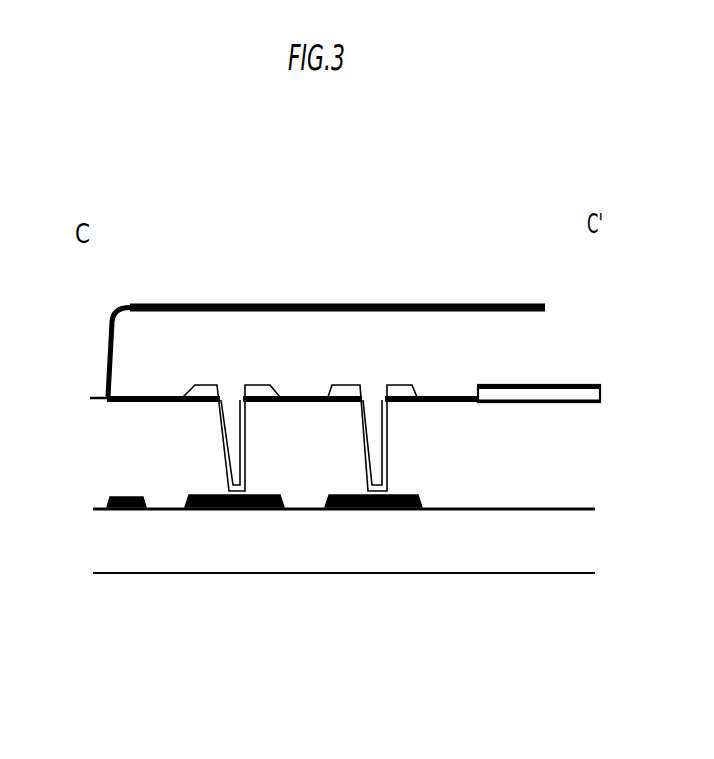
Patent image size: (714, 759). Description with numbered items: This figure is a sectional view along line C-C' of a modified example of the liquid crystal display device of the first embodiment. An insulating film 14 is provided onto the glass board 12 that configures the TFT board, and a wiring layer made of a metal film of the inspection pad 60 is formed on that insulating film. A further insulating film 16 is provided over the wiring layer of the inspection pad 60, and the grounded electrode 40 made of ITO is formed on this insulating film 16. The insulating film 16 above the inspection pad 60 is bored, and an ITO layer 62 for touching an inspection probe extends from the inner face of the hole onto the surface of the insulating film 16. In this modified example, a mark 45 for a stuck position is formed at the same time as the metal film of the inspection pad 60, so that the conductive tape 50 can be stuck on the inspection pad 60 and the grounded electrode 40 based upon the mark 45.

The glass board 12 is at (108, 610).
The insulating film 14 is at (107, 552).
The insulating film 16 is at (97, 448).
The grounded electrode 40 is at (562, 395).
The mark for a stuck position 45 is at (143, 517).
The conductive tape 50 is at (365, 367).
The inspection pad 60 is at (375, 510).
The ITO layer 62 is at (212, 383).